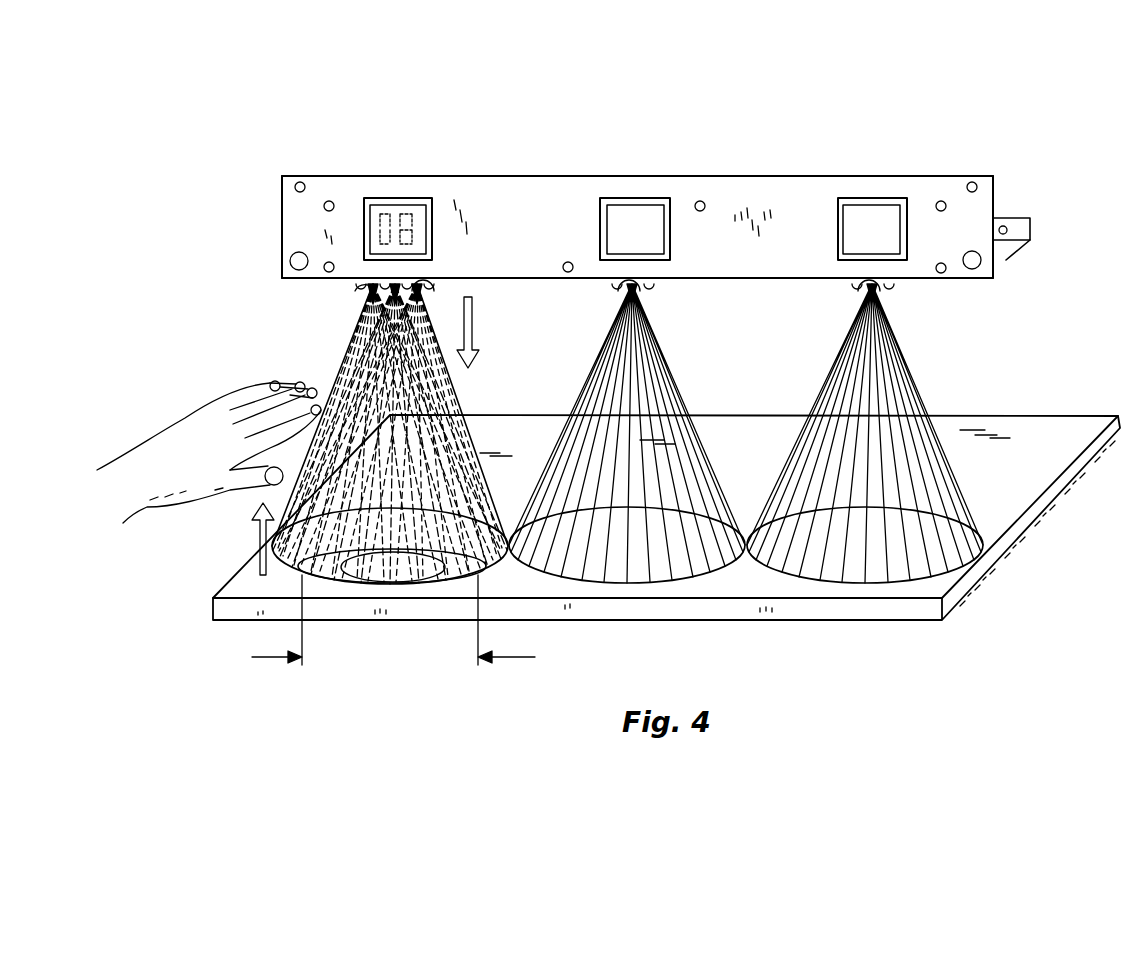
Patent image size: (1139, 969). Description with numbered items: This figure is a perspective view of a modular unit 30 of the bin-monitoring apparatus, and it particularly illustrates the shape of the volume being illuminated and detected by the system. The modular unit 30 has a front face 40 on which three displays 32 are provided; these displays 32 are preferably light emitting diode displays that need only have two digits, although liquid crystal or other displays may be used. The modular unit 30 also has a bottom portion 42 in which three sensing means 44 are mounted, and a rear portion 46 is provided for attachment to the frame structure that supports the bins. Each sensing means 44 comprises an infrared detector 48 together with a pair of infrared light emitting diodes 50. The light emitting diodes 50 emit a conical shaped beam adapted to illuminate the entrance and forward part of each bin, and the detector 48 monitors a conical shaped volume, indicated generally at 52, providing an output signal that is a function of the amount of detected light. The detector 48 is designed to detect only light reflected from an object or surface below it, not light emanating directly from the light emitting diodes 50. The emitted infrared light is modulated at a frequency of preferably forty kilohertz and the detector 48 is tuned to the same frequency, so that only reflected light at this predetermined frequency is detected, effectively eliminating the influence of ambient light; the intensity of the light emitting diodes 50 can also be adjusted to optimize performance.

The modular unit 30 is at (668, 112).
The display 32 is at (420, 210).
The front face 40 is at (816, 180).
The bottom portion 42 is at (1008, 259).
The sensing means 44 is at (333, 311).
The rear portion 46 is at (1030, 217).
The infrared detector 48 is at (402, 280).
The infrared light emitting diode 50 is at (364, 285).
The conical volume 52 is at (362, 330).